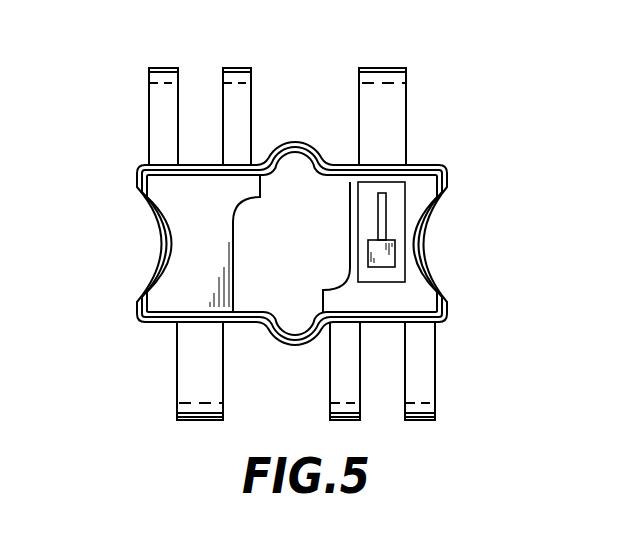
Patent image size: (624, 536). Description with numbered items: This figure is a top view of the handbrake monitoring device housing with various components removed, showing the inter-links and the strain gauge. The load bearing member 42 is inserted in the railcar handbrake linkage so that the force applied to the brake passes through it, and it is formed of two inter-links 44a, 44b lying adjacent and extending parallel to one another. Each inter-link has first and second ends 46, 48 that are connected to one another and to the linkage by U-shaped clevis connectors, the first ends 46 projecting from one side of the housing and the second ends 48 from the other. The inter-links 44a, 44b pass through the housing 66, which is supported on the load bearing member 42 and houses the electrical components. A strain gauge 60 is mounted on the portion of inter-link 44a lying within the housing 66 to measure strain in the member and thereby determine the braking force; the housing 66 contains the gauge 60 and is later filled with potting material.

The load bearing member 42 is at (148, 122).
The second end 48 is at (240, 72).
The housing 66 is at (152, 202).
The strain gauge 60 is at (385, 220).
The inter-link 44a is at (435, 353).
The inter-link 44b is at (177, 347).
The first end 46 is at (177, 405).